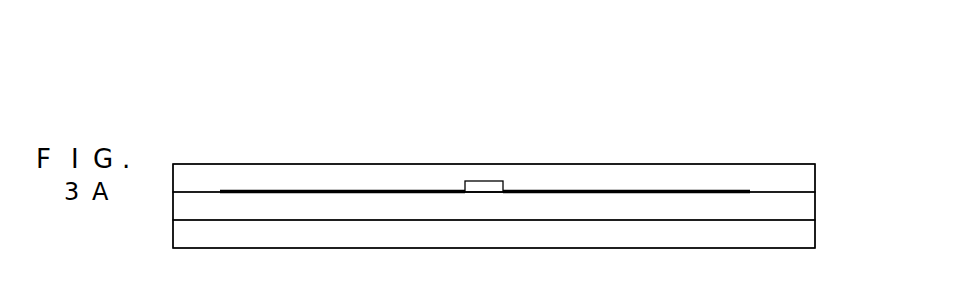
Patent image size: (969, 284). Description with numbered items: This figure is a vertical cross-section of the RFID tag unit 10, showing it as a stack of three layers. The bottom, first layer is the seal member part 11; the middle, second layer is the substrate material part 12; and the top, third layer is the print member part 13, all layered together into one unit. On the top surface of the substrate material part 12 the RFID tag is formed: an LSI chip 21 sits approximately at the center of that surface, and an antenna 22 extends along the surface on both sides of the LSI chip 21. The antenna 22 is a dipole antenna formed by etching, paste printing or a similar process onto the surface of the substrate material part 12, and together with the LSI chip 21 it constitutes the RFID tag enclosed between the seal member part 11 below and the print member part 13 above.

The RFID tag unit 10 is at (472, 91).
The seal member part 11 is at (815, 235).
The substrate material part 12 is at (815, 208).
The print member part 13 is at (815, 182).
The LSI chip 21 is at (483, 181).
The antenna 22 is at (288, 188).